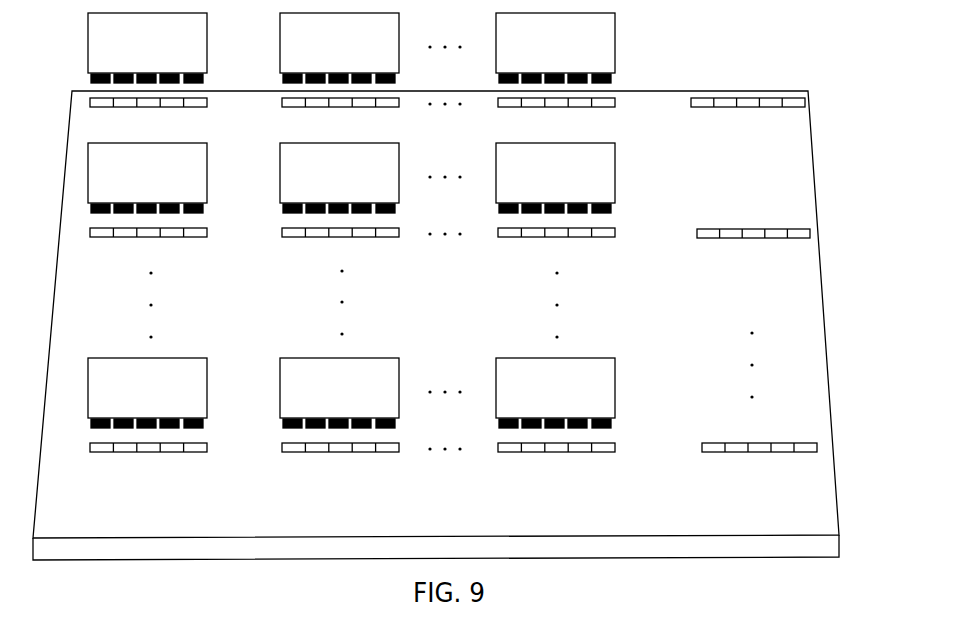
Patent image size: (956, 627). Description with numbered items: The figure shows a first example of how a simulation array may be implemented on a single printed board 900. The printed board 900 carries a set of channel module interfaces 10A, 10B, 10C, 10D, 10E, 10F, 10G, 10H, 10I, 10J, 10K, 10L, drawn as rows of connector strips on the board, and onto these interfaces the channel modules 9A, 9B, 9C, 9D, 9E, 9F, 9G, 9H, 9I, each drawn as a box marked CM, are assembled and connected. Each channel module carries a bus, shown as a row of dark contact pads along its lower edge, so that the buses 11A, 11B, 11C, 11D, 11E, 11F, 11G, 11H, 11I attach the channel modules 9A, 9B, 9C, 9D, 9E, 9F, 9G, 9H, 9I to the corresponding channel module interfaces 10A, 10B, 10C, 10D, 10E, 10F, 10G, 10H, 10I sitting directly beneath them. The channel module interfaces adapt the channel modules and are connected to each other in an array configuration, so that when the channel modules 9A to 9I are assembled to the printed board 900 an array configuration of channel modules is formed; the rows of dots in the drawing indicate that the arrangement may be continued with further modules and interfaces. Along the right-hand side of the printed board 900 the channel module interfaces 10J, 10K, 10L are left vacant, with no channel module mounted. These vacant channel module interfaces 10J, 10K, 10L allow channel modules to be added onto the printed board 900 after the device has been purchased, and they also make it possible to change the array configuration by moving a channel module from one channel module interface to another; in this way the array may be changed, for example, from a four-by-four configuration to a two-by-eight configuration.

The printed board 900 is at (753, 90).
The channel module 9A is at (202, 40).
The channel module 9B is at (394, 40).
The channel module 9C is at (610, 40).
The channel module 9D is at (202, 170).
The channel module 9E is at (394, 170).
The channel module 9F is at (610, 170).
The channel module 9G is at (202, 385).
The channel module 9H is at (394, 385).
The channel module 9I is at (604, 385).
The bus 11A is at (208, 78).
The bus 11B is at (400, 78).
The bus 11C is at (616, 78).
The bus 11D is at (208, 208).
The bus 11E is at (400, 208).
The bus 11F is at (616, 208).
The bus 11G is at (208, 423).
The bus 11H is at (400, 423).
The bus 11I is at (616, 423).
The channel module interface 10A is at (208, 103).
The channel module interface 10B is at (399, 99).
The channel module interface 10C is at (616, 103).
The channel module interface 10D is at (208, 233).
The channel module interface 10E is at (399, 229).
The channel module interface 10F is at (616, 233).
The channel module interface 10G is at (208, 448).
The channel module interface 10H is at (399, 444).
The channel module interface 10I is at (616, 448).
The vacant channel module interface 10J is at (753, 107).
The vacant channel module interface 10K is at (757, 238).
The vacant channel module interface 10L is at (766, 452).